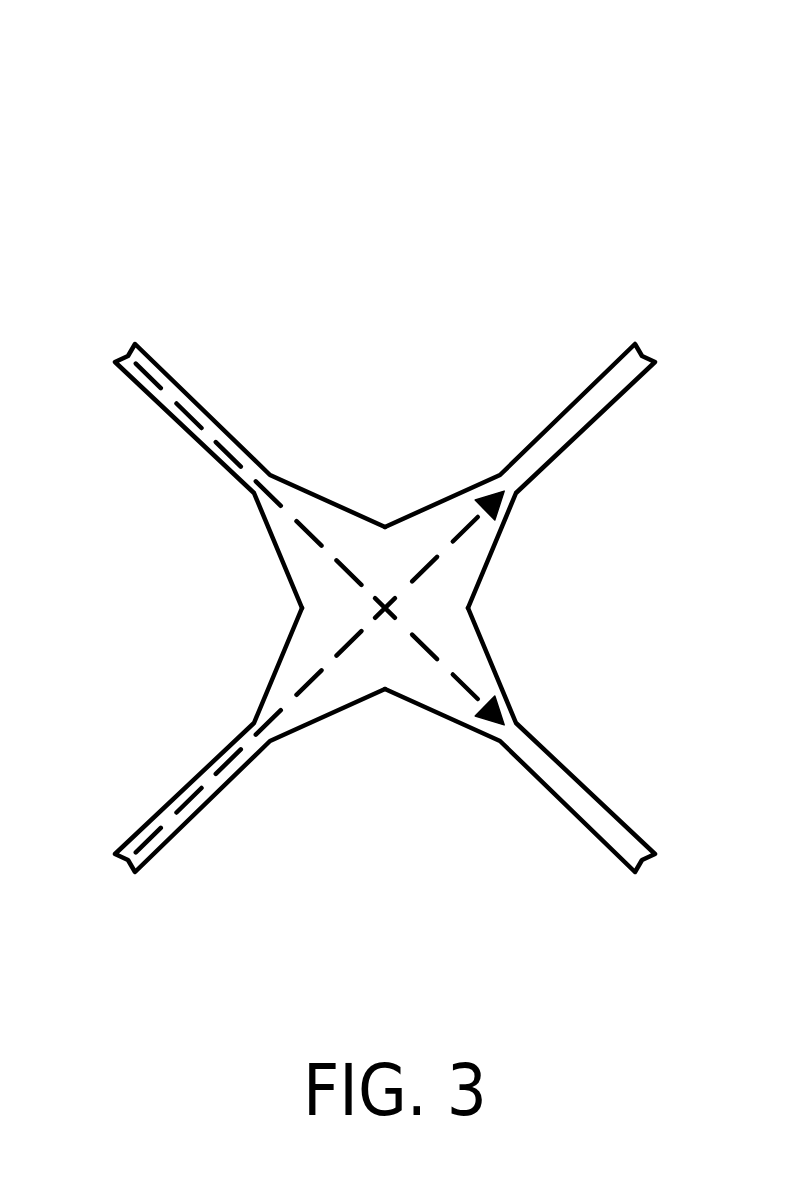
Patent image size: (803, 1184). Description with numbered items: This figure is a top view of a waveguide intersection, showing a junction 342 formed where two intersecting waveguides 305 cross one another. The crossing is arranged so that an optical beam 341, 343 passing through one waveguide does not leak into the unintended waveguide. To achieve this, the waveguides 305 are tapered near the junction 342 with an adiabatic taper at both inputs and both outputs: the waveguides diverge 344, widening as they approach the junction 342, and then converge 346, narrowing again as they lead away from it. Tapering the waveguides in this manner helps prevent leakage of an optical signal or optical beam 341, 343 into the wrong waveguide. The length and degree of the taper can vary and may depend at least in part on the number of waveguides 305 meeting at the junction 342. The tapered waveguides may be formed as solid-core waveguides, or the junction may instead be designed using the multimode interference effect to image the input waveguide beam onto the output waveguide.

The junction 342 is at (344, 201).
The waveguides 305 is at (573, 403).
The optical beam 341 is at (343, 560).
The diverge 344 is at (282, 567).
The optical beam 343 is at (190, 798).
The converge 346 is at (437, 712).